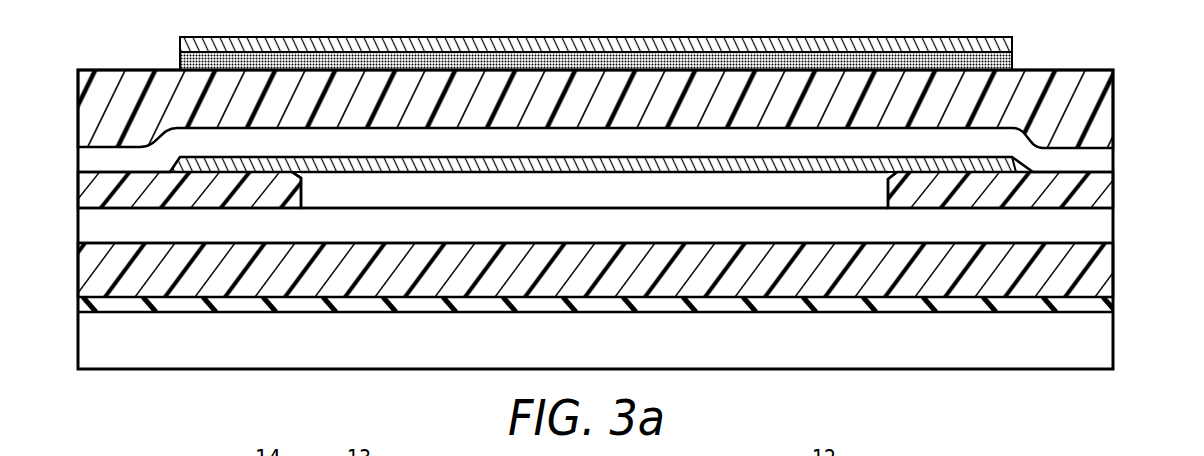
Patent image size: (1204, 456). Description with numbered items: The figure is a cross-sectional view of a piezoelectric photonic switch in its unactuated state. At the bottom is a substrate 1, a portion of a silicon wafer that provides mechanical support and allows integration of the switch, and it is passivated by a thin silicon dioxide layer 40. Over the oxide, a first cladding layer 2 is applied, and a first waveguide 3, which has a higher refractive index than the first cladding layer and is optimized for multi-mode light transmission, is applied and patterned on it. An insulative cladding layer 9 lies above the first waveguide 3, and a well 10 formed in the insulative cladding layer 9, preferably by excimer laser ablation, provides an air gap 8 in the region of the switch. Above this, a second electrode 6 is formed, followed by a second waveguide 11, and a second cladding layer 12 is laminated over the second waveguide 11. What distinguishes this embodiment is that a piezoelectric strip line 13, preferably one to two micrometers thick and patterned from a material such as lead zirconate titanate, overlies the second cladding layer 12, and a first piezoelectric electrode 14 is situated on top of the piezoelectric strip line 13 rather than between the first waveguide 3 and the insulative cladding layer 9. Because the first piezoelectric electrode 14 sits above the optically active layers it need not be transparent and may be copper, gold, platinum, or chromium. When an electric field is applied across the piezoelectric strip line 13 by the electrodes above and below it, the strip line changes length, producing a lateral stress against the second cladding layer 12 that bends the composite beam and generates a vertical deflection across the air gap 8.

The substrate 1 is at (1085, 333).
The silicon dioxide layer 40 is at (1090, 302).
The first cladding layer 2 is at (1092, 276).
The first waveguide 3 is at (1090, 228).
The insulative cladding layer 9 is at (96, 199).
The well 10 is at (300, 180).
The air gap 8 is at (773, 193).
The second electrode 6 is at (227, 170).
The second waveguide 11 is at (93, 156).
The second cladding layer 12 is at (1090, 100).
The first piezoelectric electrode 14 is at (395, 48).
The piezoelectric strip line 13 is at (413, 48).